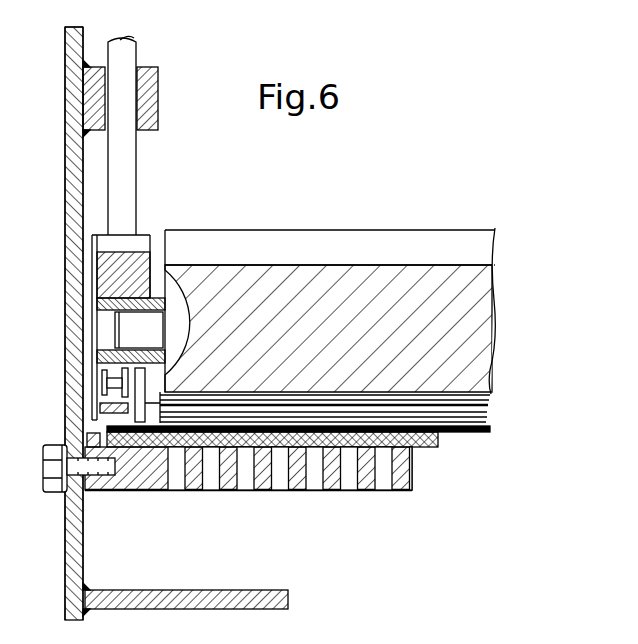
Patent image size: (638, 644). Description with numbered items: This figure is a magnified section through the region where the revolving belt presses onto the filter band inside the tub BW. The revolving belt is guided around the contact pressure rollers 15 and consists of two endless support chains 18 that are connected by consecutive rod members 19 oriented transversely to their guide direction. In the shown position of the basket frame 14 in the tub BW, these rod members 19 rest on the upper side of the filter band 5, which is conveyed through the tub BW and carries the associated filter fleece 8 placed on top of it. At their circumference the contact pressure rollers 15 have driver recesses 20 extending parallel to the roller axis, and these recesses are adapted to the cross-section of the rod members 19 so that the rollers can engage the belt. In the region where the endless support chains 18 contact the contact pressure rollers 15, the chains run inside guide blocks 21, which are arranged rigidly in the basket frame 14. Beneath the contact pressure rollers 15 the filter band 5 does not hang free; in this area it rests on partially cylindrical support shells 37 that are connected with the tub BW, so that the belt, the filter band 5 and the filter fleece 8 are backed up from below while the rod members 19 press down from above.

The tub BW is at (75, 198).
The basket frame 14 is at (130, 184).
The driver recesses 20 is at (210, 255).
The contact pressure rollers 15 is at (330, 310).
The endless support chains 18 is at (100, 376).
The guide blocks 21 is at (97, 396).
The filter fleece 8 is at (455, 433).
The filter band 5 is at (427, 446).
The support shells 37 is at (155, 490).
The rod members 19 is at (311, 450).